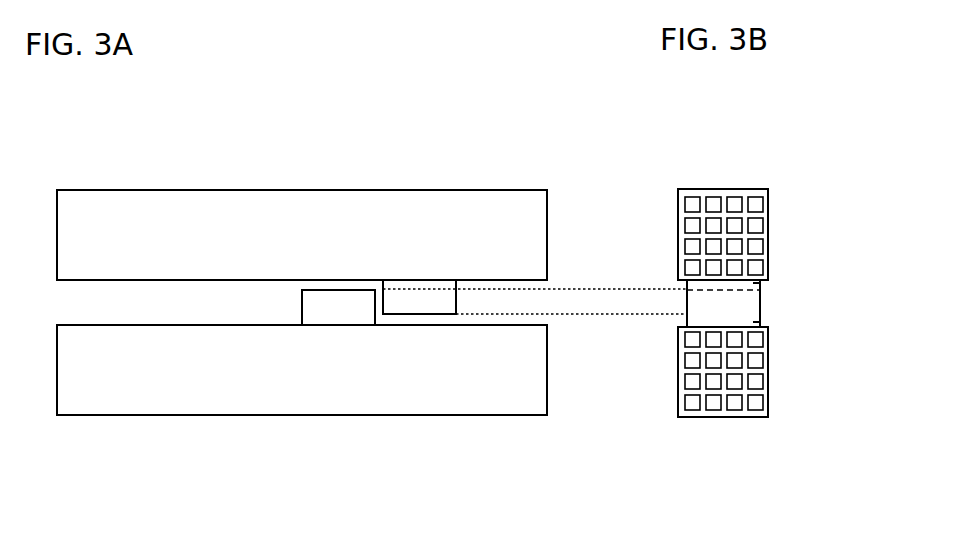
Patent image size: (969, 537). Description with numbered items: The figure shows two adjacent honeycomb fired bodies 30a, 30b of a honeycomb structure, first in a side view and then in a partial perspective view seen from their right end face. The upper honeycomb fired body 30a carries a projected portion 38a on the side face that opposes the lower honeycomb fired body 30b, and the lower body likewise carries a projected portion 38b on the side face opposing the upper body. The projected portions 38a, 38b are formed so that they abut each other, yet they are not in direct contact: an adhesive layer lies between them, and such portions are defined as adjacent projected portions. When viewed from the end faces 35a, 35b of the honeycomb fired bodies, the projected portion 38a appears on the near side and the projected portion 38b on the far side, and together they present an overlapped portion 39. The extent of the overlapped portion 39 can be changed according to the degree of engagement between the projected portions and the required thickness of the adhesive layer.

In FIG. 3A, the honeycomb fired body 30a is at (462, 205).
In FIG. 3A, the honeycomb fired body 30b is at (482, 400).
In FIG. 3A, the projected portion 38a is at (420, 300).
In FIG. 3B, the projected portion 38a is at (753, 283).
In FIG. 3A, the projected portion 38b is at (333, 306).
In FIG. 3B, the projected portion 38b is at (753, 322).
In FIG. 3B, the end face 35a is at (723, 190).
In FIG. 3B, the end face 35b is at (723, 417).
In FIG. 3B, the overlapped portion 39 is at (767, 288).